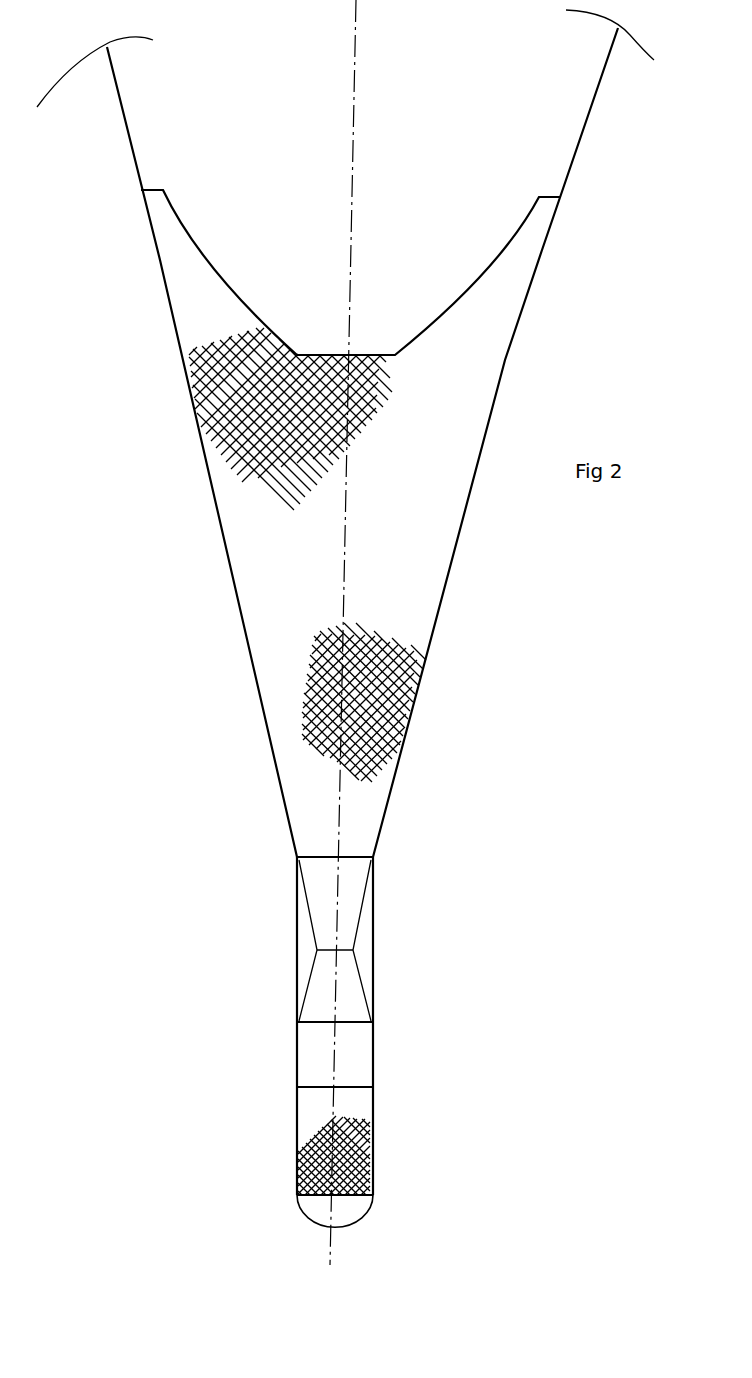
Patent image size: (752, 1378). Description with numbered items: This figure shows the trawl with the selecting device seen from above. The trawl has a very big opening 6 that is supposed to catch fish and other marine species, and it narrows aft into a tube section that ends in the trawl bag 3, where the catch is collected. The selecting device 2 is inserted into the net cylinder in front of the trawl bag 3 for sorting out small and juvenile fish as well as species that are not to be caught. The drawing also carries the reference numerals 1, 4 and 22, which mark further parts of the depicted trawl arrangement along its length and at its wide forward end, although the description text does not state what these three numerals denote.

The granular material 1 is at (400, 675).
The selecting device 2 is at (352, 908).
The trawl bag 3 is at (365, 1103).
The longitudinal axis 4 is at (358, 97).
The opening 6 is at (394, 248).
The funnel walls 22 is at (127, 128).